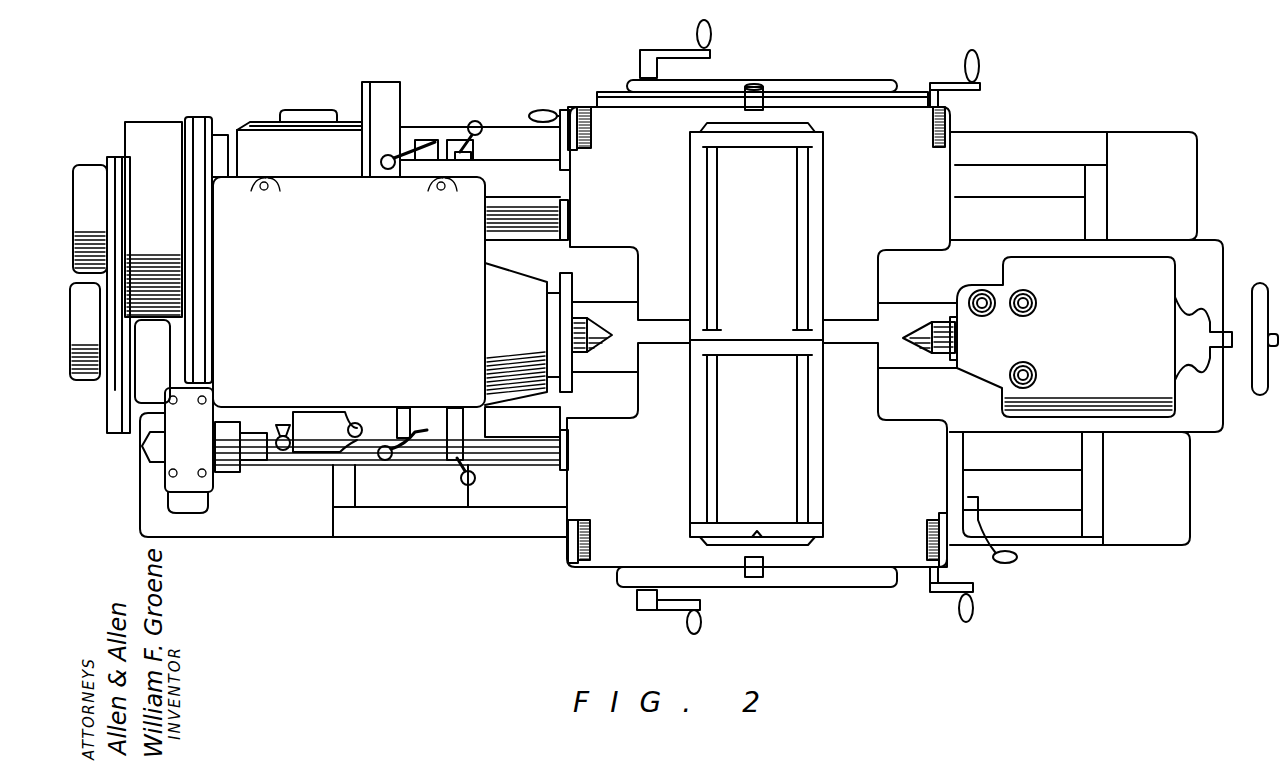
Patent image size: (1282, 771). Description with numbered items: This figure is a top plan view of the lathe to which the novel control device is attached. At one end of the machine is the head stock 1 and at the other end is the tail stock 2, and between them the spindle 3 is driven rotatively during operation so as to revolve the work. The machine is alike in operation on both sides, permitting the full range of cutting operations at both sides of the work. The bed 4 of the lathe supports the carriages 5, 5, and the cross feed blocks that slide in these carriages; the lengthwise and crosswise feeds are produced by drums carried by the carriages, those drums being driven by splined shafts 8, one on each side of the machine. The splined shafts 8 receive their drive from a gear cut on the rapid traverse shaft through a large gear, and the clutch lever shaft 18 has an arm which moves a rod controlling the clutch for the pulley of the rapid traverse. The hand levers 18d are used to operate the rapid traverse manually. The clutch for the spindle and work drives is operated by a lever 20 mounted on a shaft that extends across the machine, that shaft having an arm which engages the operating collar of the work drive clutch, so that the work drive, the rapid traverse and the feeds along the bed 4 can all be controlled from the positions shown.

The head stock 1 is at (513, 340).
The tail stock 2 is at (992, 332).
The spindle 3 is at (598, 330).
The bed 4 is at (527, 418).
The carriage 5 is at (842, 143).
The splined shaft 8 is at (538, 455).
The clutch lever shaft 18 is at (448, 418).
The hand lever 18d is at (474, 120).
The lever 20 is at (410, 157).